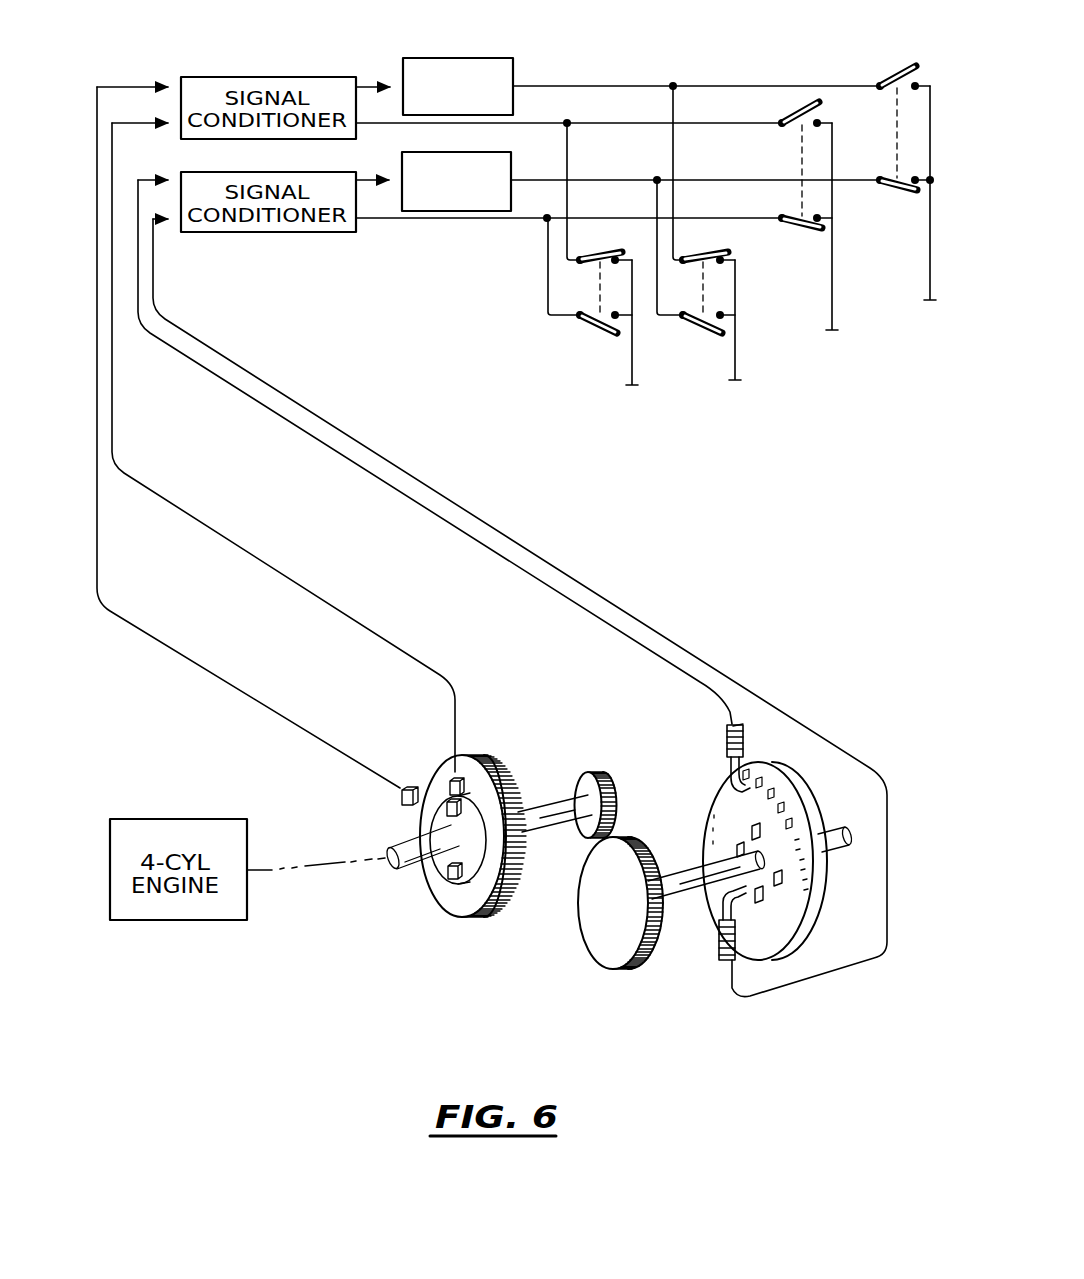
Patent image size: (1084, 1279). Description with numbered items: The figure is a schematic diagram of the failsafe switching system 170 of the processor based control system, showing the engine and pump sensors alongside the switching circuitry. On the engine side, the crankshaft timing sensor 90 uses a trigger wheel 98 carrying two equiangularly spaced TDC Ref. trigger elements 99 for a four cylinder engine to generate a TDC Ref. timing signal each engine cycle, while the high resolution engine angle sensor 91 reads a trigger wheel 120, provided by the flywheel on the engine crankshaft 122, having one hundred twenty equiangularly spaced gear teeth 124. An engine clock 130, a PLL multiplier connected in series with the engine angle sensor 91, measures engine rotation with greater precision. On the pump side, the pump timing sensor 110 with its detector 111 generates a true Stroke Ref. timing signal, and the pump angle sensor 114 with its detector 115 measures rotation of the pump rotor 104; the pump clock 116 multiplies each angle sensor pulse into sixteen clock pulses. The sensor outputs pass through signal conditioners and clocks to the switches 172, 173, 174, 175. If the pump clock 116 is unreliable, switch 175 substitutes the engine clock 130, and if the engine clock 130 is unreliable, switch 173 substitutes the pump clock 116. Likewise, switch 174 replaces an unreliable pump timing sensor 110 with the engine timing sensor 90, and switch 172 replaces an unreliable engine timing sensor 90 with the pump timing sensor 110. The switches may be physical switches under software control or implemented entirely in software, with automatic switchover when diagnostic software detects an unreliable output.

The crankshaft timing sensor 90 is at (463, 832).
The engine angle sensor 91 is at (400, 770).
The trigger wheel 98 is at (465, 907).
The TDC Ref. trigger elements 99 is at (482, 793).
The pump rotor 104 is at (683, 880).
The pump timing sensor 110 is at (695, 946).
The detector 111 is at (722, 912).
The pump angle sensor 114 is at (692, 755).
The detector 115 is at (733, 790).
The pump clock 116 is at (488, 152).
The trigger wheel 120 is at (496, 860).
The engine crankshaft 122 is at (410, 842).
The gear teeth 124 is at (527, 877).
The engine clock 130 is at (484, 56).
The failsafe switching system 170 is at (824, 55).
The switch 172 is at (600, 283).
The switch 173 is at (703, 290).
The switch 174 is at (802, 150).
The switch 175 is at (897, 115).